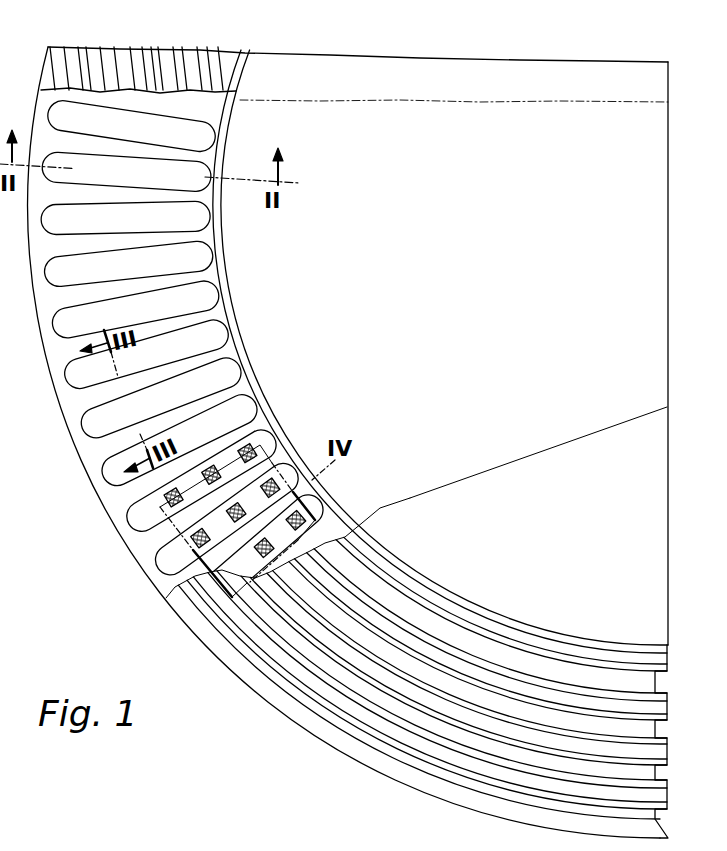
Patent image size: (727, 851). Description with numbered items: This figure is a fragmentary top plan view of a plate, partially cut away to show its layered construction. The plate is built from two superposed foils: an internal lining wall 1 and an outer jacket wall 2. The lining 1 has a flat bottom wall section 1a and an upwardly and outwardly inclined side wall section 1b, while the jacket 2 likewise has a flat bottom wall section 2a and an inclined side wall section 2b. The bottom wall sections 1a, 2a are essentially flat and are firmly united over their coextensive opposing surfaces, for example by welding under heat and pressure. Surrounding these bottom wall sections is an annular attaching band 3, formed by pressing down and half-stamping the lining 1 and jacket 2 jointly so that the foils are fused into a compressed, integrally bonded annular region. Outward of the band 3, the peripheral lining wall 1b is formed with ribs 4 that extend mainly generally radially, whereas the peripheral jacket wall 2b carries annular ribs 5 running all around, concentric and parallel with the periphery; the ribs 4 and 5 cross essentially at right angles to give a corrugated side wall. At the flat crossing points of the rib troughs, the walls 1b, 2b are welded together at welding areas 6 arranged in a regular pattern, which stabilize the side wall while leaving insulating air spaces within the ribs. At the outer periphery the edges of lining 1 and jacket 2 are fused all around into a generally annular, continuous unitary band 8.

The internal lining wall 1 is at (486, 284).
The lining bottom wall section 1a is at (533, 148).
The lining side wall section 1b is at (55, 242).
The outer jacket wall 2 is at (600, 538).
The jacket bottom wall section 2a is at (448, 88).
The jacket side wall section 2b is at (317, 630).
The annular attaching band 3 is at (245, 74).
The ribs 4 is at (103, 450).
The annular ribs 5 is at (362, 735).
The welding areas 6 is at (200, 603).
The outer periphery band 8 is at (403, 780).